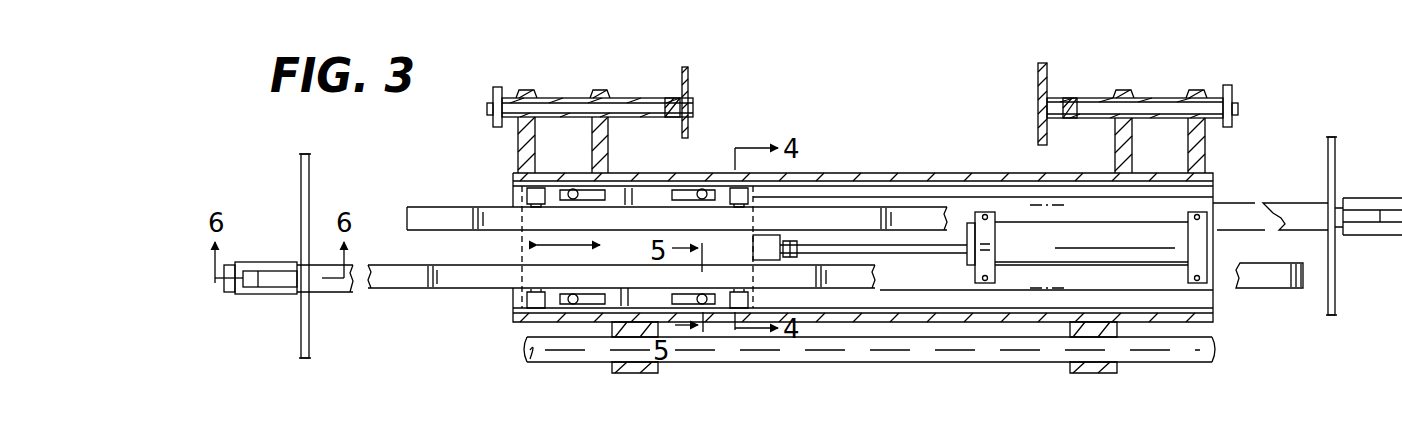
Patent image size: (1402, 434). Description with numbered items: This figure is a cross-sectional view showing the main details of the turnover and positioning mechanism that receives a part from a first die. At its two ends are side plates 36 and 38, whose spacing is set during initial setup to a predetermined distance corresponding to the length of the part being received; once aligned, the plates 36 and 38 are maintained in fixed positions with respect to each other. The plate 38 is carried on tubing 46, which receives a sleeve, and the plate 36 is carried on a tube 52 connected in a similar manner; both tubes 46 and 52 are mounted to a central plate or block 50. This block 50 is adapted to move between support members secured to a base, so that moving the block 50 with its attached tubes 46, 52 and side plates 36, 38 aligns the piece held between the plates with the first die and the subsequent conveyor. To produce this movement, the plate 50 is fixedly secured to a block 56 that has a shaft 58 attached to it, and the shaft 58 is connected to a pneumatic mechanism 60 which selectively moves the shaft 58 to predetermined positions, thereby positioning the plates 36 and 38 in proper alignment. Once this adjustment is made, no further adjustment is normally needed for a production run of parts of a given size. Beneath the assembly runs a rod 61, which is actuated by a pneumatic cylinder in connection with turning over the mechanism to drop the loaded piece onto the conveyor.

The plate 36 is at (1337, 302).
The plate 38 is at (310, 342).
The tubing 46 is at (407, 286).
The plate or block 50 is at (525, 245).
The tube 52 is at (1305, 208).
The block 56 is at (757, 245).
The shaft 58 is at (893, 243).
The pneumatic mechanism 60 is at (1200, 245).
The rod 61 is at (1190, 353).